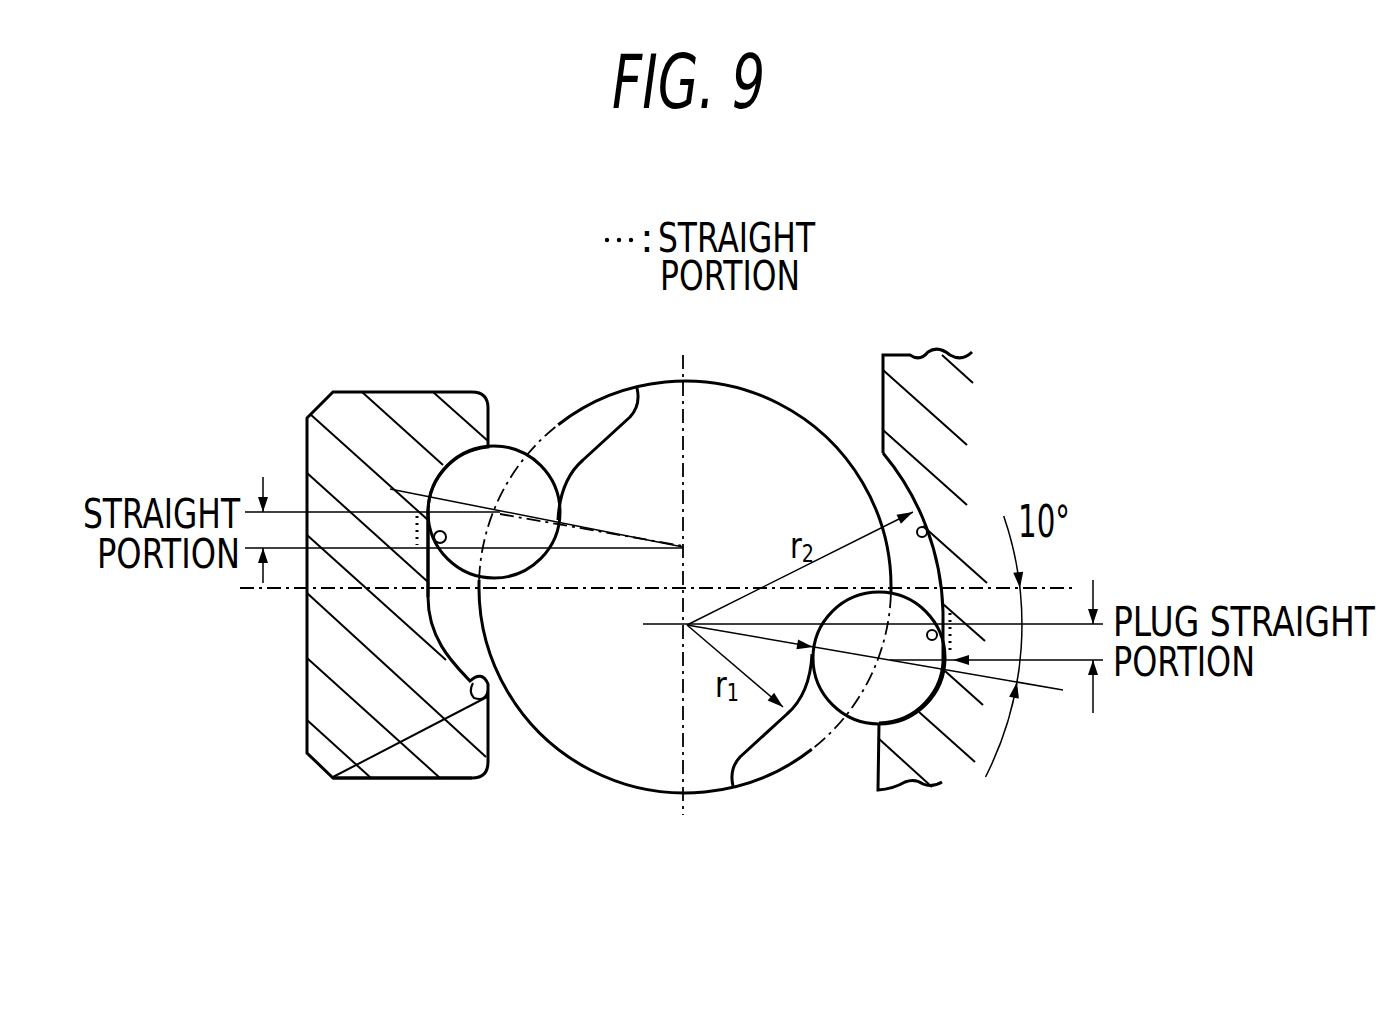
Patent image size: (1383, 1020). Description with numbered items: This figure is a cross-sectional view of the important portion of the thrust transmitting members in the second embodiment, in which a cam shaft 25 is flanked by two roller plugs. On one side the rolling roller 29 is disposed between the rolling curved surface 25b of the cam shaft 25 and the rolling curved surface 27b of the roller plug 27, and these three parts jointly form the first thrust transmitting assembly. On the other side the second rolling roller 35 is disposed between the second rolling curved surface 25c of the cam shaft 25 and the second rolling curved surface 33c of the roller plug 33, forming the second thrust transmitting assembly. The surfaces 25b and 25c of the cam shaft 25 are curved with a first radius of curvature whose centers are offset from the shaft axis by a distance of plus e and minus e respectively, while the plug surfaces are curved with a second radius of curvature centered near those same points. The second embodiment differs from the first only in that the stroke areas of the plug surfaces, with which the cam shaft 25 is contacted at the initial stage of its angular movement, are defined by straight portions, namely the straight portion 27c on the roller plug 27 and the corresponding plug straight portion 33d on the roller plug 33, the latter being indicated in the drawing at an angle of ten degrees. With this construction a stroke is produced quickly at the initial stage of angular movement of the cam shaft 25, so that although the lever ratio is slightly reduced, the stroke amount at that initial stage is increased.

The cam shaft 25 is at (595, 737).
The rolling curved surface 25b is at (583, 460).
The second rolling curved surface 25c is at (762, 725).
The roller plug 27 is at (405, 413).
The rolling curved surface 27b is at (358, 778).
The straight portion 27c is at (427, 559).
The rolling roller 29 is at (492, 465).
The roller plug 33 is at (925, 378).
The second rolling curved surface 33c is at (915, 521).
The plug straight portion 33d is at (955, 620).
The second rolling roller 35 is at (873, 707).